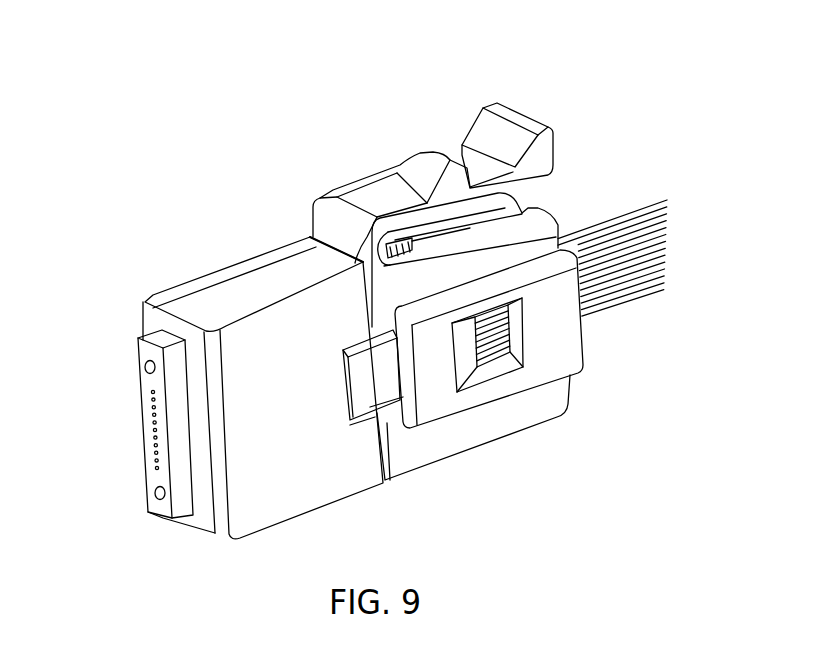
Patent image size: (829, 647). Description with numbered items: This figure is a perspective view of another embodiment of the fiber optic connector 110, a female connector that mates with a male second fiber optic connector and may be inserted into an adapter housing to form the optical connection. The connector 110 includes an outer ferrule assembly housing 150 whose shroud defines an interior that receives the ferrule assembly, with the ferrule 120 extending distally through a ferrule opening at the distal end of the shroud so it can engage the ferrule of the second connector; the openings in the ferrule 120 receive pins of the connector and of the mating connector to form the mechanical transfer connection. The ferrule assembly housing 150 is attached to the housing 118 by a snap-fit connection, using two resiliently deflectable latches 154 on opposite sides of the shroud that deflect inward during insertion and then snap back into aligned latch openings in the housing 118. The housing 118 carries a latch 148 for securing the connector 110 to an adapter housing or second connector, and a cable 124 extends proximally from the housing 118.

The fiber optic connector 110 is at (281, 128).
The housing 118 is at (411, 142).
The latch 148 is at (503, 128).
The cable 124 is at (627, 257).
The ferrule assembly housing 150 is at (202, 239).
The ferrule 120 is at (172, 427).
The latch 154 is at (374, 378).